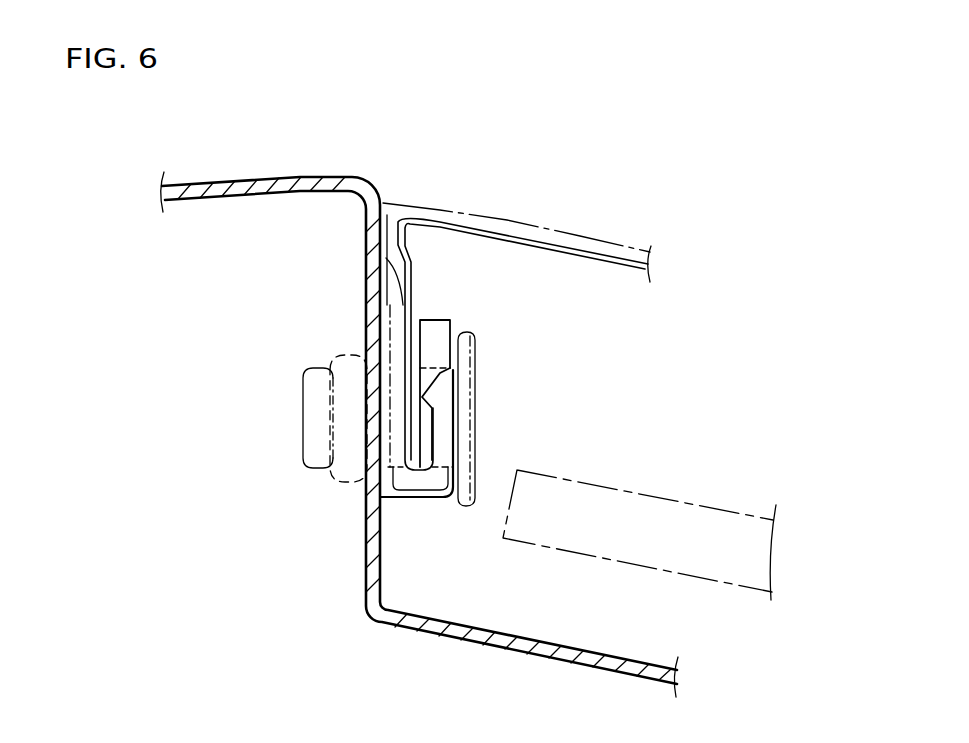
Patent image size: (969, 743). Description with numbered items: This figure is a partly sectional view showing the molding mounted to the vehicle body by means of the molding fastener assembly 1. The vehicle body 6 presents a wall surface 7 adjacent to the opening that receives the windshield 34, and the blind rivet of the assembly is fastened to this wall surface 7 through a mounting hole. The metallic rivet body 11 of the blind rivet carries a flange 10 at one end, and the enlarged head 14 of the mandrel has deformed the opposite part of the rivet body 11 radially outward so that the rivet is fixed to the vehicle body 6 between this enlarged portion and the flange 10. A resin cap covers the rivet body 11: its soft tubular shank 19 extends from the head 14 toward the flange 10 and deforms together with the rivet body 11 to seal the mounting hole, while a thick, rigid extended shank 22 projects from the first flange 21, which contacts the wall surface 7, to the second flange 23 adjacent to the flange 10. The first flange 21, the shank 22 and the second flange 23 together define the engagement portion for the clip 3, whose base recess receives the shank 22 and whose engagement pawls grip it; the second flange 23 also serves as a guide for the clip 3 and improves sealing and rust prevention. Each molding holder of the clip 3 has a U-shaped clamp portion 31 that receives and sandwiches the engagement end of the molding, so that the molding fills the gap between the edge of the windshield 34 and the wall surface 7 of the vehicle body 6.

The molding fastener assembly 1 is at (338, 262).
The clip 3 is at (462, 318).
The vehicle body 6 is at (433, 637).
The wall surface 7 is at (366, 538).
The flange 10 is at (468, 343).
The rivet body 11 is at (353, 352).
The head 14 is at (310, 418).
The shank 19 is at (283, 383).
The first flange 21 is at (411, 312).
The shank 22 is at (415, 457).
The second flange 23 is at (555, 401).
The U-shaped clamp portion 31 is at (445, 433).
The windshield 34 is at (628, 488).